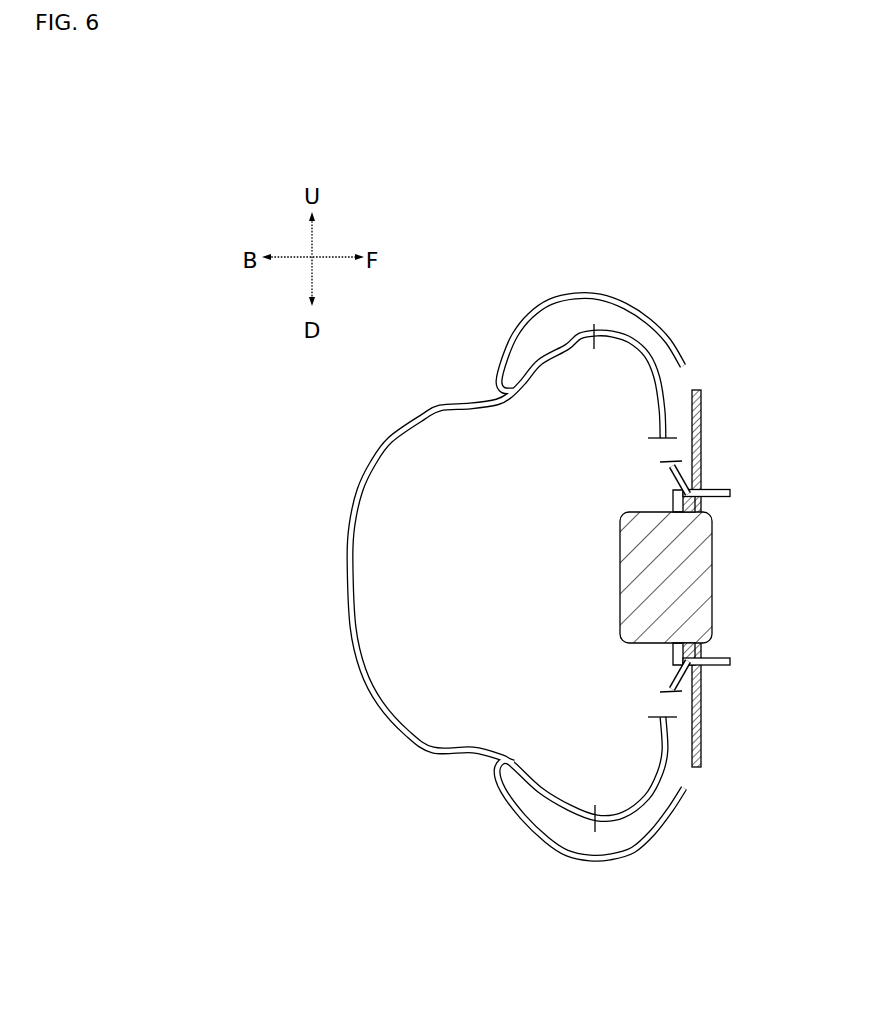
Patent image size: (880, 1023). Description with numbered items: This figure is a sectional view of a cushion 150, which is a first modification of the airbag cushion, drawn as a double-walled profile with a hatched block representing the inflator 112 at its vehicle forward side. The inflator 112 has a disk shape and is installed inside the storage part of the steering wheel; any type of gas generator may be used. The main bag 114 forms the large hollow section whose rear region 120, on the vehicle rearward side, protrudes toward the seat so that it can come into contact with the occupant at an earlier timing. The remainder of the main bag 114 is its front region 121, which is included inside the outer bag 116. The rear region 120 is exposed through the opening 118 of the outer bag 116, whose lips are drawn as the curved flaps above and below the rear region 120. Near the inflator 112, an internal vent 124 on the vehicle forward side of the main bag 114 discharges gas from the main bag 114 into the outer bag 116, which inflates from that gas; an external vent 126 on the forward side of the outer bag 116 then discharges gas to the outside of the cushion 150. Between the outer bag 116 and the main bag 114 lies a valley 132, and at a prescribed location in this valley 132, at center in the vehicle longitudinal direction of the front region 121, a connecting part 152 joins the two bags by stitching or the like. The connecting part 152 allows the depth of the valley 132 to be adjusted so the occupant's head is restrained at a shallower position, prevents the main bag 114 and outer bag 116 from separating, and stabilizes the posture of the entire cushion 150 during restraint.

The cushion 150 is at (495, 292).
The rear region 120 is at (368, 697).
The main bag 114 is at (428, 751).
The outer bag 116 is at (650, 313).
The opening 118 is at (497, 390).
The front region 121 is at (632, 346).
The valley 132 is at (511, 409).
The connecting part 152 is at (594, 350).
The external vent 126 is at (693, 376).
The inflator 112 is at (713, 572).
The internal vent 124 is at (658, 452).